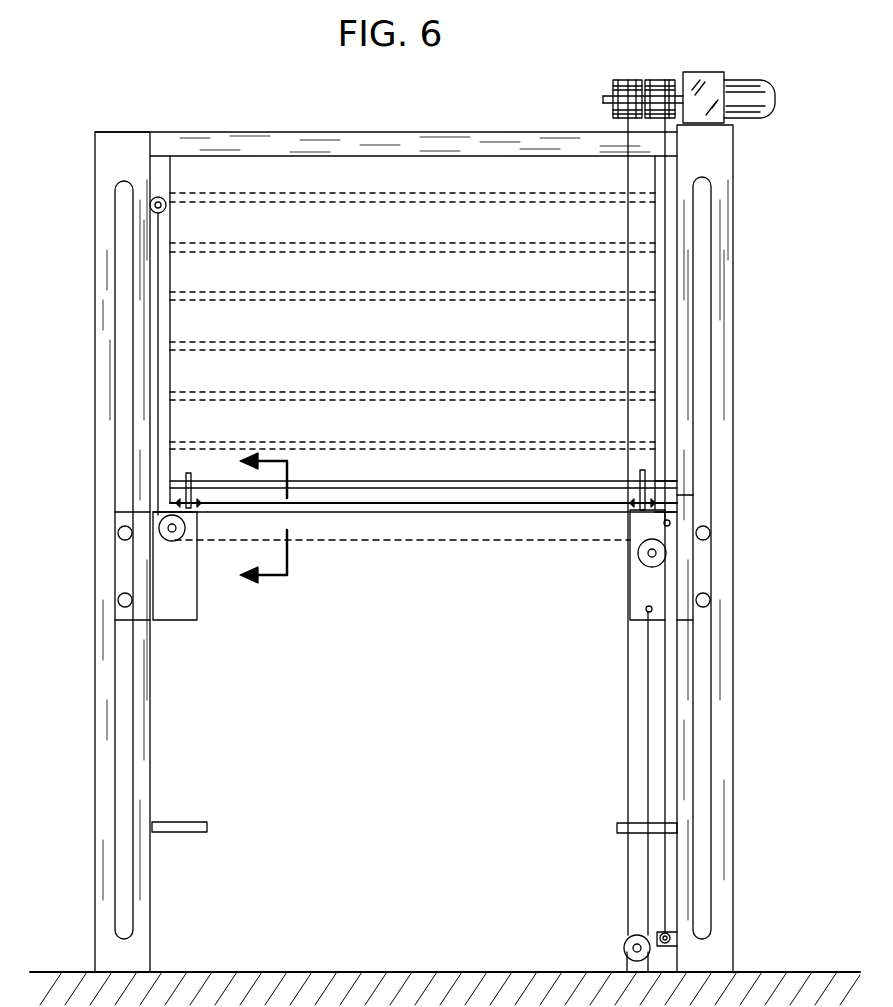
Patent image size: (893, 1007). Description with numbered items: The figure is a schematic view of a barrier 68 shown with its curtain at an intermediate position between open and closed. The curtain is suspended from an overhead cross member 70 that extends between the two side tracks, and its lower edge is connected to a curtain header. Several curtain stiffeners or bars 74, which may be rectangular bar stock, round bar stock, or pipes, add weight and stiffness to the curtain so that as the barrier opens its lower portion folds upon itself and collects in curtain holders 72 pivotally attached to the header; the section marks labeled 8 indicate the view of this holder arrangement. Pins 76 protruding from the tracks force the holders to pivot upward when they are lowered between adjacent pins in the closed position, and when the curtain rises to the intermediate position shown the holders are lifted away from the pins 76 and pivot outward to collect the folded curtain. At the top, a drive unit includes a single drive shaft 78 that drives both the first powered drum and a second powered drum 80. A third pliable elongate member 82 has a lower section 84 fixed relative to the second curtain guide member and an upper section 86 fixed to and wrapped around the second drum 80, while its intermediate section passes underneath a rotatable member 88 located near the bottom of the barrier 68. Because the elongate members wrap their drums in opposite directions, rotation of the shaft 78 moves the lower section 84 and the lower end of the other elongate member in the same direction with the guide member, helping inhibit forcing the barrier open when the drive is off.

The barrier 68 is at (177, 98).
The overhead cross member 70 is at (335, 158).
The curtain stiffeners or bars 74 is at (520, 348).
The curtain holders 72 is at (190, 472).
The section line 8- 8 is at (252, 522).
The third pliable elongate member 82 is at (648, 705).
The lower section 84 is at (648, 638).
The rotatable member 88 is at (625, 950).
The pins 76 is at (175, 823).
The upper section 86 is at (605, 100).
The drive shaft 78 is at (612, 92).
The second powered drum 80 is at (655, 80).